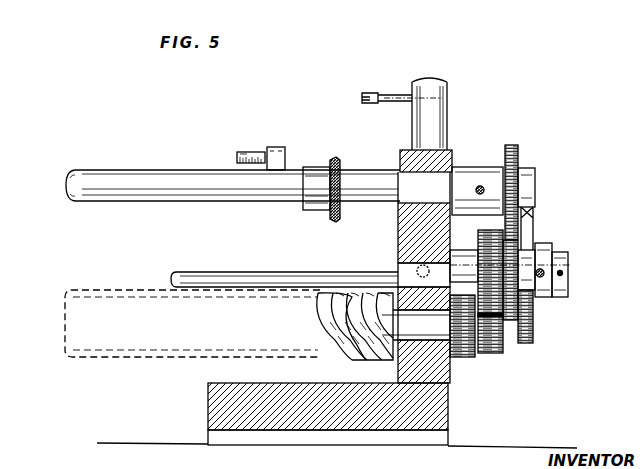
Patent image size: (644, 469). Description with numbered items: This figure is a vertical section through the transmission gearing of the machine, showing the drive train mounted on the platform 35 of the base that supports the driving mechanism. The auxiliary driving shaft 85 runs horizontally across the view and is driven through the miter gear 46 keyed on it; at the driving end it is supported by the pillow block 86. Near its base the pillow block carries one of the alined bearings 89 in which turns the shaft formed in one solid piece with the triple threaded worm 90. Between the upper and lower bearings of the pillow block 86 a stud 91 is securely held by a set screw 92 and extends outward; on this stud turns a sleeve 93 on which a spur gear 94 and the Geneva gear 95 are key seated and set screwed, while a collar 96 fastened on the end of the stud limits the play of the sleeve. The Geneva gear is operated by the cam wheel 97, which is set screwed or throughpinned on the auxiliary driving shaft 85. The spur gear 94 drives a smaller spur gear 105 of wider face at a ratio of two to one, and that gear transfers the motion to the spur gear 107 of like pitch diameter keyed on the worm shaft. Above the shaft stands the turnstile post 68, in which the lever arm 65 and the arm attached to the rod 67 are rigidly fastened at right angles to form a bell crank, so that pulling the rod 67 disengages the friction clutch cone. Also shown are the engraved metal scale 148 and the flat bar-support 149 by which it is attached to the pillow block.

The platform 35 is at (318, 425).
The miter gear 46 is at (312, 172).
The lever arm 65 is at (384, 100).
The rod 67 is at (243, 278).
The turnstile post 68 is at (447, 120).
The auxiliary driving shaft 85 is at (180, 176).
The pillow block 86 is at (412, 167).
The bearings 89 is at (418, 345).
The triple threaded worm 90 is at (328, 325).
The stud 91 is at (400, 250).
The set screw 92 is at (413, 277).
The sleeve 93 is at (507, 247).
The spur gear 94 is at (487, 229).
The Geneva gear 95 is at (535, 318).
The collar 96 is at (570, 272).
The cam wheel 97 is at (513, 166).
The spur gear 105 is at (489, 353).
The spur gear 107 is at (466, 358).
The engraved metal scale 148 is at (252, 151).
The flat bar-support 149 is at (278, 147).